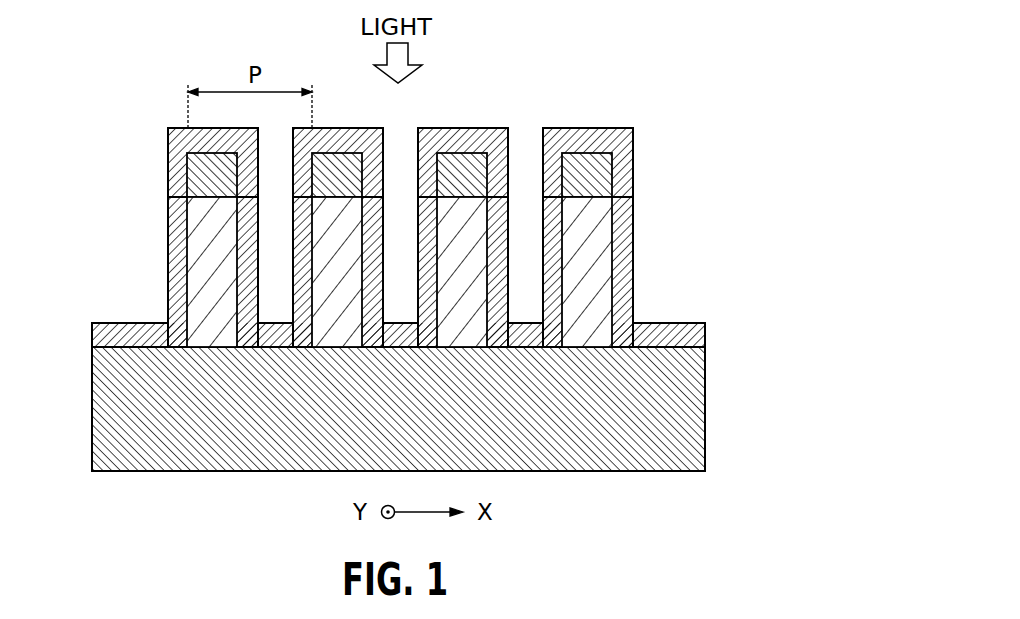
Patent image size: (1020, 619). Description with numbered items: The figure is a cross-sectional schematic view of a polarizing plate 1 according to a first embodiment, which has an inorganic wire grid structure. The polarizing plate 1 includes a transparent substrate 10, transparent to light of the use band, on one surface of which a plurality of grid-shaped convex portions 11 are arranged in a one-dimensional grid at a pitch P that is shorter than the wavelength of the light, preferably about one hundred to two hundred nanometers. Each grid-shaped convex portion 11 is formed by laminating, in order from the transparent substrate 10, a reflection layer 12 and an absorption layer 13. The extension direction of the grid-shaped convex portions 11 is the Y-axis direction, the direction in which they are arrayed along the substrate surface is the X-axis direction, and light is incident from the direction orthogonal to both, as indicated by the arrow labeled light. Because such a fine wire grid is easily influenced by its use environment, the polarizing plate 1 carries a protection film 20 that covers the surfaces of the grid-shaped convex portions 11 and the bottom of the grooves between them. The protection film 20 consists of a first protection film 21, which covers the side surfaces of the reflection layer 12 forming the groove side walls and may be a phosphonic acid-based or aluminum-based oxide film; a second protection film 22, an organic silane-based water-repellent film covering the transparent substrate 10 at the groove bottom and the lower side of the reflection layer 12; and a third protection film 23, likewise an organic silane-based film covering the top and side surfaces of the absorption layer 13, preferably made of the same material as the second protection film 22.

The polarizing plate 1 is at (438, 237).
The transparent substrate 10 is at (705, 388).
The grid-shaped convex portion 11 is at (438, 188).
The reflection layer 12 is at (169, 257).
The absorption layer 13 is at (169, 183).
The protection film 20 is at (438, 237).
The first protection film 21 is at (633, 217).
The second protection film 22 is at (660, 325).
The third protection film 23 is at (633, 172).